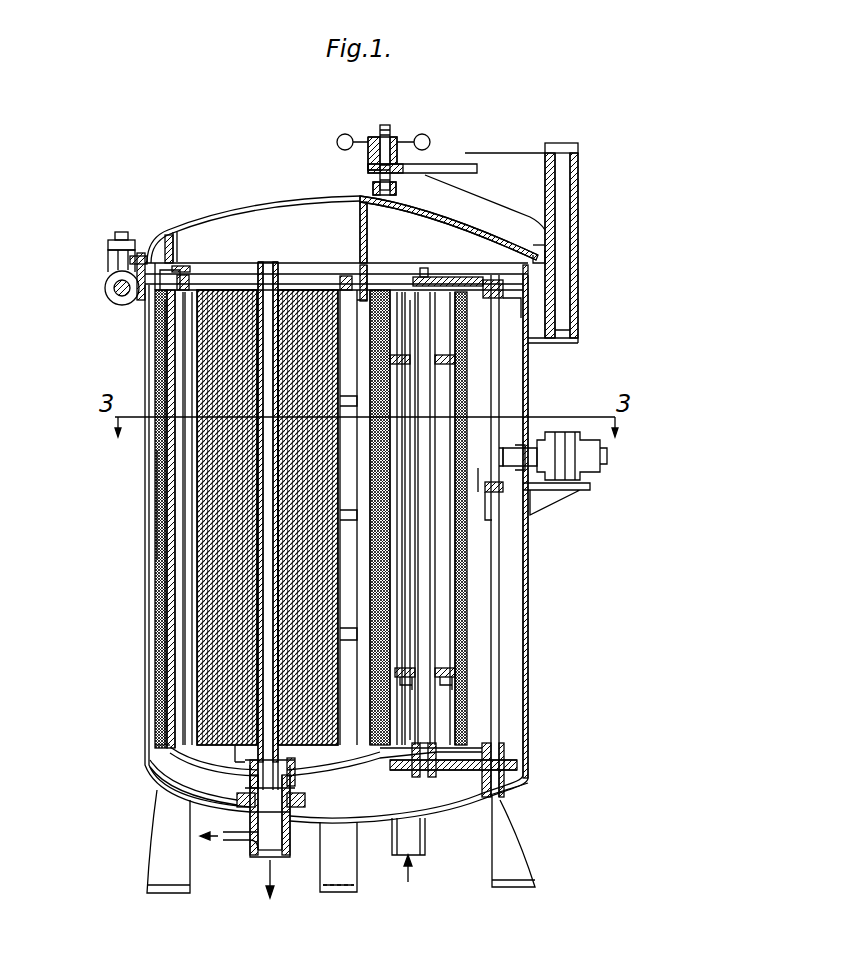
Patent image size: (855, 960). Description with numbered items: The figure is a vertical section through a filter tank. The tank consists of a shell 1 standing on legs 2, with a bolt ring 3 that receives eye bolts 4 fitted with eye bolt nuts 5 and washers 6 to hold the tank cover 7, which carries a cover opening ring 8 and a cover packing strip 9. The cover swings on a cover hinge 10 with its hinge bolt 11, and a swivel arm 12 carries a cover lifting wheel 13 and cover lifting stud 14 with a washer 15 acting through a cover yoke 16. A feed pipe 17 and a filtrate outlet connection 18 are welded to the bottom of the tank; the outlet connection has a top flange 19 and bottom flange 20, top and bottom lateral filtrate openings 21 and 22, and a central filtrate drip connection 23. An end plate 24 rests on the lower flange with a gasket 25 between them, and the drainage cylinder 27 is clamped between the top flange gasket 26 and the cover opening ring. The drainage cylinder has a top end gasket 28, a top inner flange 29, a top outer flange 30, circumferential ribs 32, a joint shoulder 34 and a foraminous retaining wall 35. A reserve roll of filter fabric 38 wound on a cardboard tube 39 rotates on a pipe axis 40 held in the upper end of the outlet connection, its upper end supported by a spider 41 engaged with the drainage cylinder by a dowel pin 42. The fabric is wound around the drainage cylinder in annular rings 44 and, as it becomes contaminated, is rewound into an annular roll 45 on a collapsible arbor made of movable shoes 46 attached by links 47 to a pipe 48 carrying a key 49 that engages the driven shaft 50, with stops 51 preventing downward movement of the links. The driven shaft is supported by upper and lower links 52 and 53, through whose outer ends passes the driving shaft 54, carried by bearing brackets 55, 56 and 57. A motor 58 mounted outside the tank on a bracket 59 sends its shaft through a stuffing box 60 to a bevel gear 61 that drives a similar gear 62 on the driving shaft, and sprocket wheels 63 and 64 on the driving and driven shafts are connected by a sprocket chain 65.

The shell 1 is at (145, 618).
The legs 2 is at (165, 857).
The bolt ring 3 is at (120, 312).
The eye bolts 4 is at (118, 232).
The eye bolt nuts 5 is at (108, 242).
The washers 6 is at (112, 258).
The tank cover 7 is at (262, 215).
The cover opening ring 8 is at (360, 205).
The cover packing strip 9 is at (548, 250).
The cover hinge 10 is at (580, 303).
The hinge bolt 11 is at (580, 146).
The swivel arm 12 is at (462, 163).
The cover lifting wheel 13 is at (343, 138).
The cover lifting stud 14 is at (388, 125).
The washer 15 is at (370, 160).
The cover yoke 16 is at (400, 190).
The feed pipe 17 is at (385, 875).
The filtrate outlet connection 18 is at (262, 860).
The top flange 19 is at (292, 760).
The bottom flange 20 is at (292, 830).
The top lateral filtrate opening 21 is at (230, 762).
The bottom lateral filtrate opening 22 is at (253, 772).
The central filtrate drip connection 23 is at (240, 840).
The end plate 24 is at (165, 775).
The gasket 25 is at (305, 800).
The top flange gasket 26 is at (340, 768).
The drainage cylinder 27 is at (167, 680).
The top end gasket 28 is at (370, 270).
The top inner flange 29 is at (343, 280).
The top outer flange 30 is at (378, 290).
The circumferential ribs 32 is at (165, 500).
The joint shoulder 34 is at (155, 330).
The foraminous retaining wall 35 is at (160, 440).
The reserve roll of filter fabric 38 is at (192, 560).
The cardboard tube 39 is at (250, 290).
The pipe axis 40 is at (272, 272).
The spider 41 is at (215, 285).
The dowel pin 42 is at (180, 268).
The annular rings 44 is at (155, 728).
The annular roll 45 is at (455, 675).
The movable shoes 46 is at (420, 280).
The links 47 is at (440, 665).
The pipe 48 is at (430, 405).
The key 49 is at (420, 600).
The driven shaft 50 is at (440, 278).
The stops 51 is at (455, 682).
The link 52 is at (480, 282).
The link 53 is at (505, 745).
The driving shaft 54 is at (523, 605).
The bearing bracket 55 is at (530, 315).
The bearing bracket 56 is at (520, 478).
The bearing bracket 57 is at (510, 800).
The motor 58 is at (605, 455).
The bracket 59 is at (570, 490).
The stuffing box 60 is at (530, 455).
The bevel gear 61 is at (500, 455).
The bevel gear 62 is at (478, 495).
The sprocket wheel 63 is at (517, 763).
The sprocket wheel 64 is at (435, 777).
The sprocket chain 65 is at (528, 780).